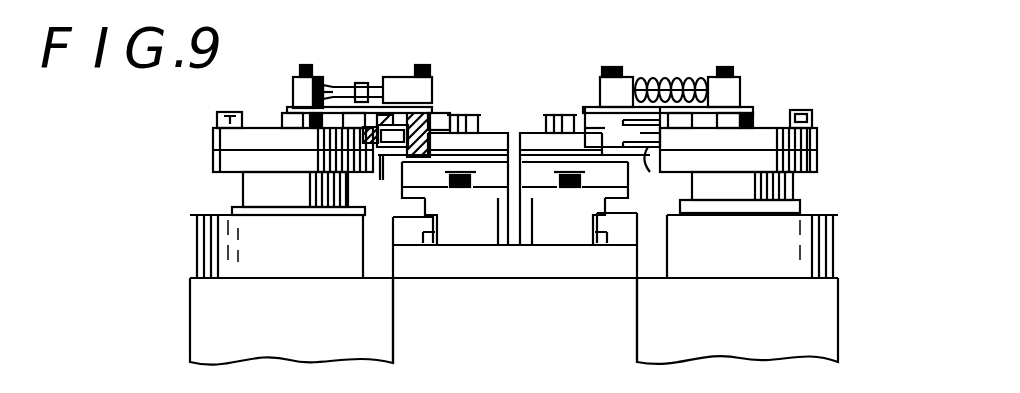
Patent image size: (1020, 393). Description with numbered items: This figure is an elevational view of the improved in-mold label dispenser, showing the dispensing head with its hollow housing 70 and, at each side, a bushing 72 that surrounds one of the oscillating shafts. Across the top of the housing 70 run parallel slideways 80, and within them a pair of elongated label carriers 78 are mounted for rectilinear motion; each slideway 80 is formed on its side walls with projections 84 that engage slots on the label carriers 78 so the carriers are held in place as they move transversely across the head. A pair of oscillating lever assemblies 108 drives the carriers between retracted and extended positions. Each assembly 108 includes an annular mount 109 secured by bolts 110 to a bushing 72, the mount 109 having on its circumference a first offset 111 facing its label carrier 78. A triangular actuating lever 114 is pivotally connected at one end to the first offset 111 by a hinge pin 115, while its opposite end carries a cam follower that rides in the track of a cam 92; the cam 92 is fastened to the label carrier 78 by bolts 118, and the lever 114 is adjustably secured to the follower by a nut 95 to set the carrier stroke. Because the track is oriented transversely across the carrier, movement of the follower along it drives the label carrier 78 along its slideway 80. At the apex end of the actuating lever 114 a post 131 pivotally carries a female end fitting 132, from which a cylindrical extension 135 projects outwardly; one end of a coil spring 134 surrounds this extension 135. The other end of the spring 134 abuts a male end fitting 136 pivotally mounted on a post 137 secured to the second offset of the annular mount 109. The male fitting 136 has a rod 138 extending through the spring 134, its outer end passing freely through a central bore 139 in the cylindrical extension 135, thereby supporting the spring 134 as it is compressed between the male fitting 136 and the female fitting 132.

The hollow housing 70 is at (200, 320).
The bushing 72 is at (250, 192).
The label carrier 78 is at (562, 293).
The slideway 80 is at (452, 247).
The projection 84 is at (433, 248).
The cam 92 is at (407, 197).
The nut 95 is at (468, 113).
The oscillating lever assembly 108 is at (277, 112).
The annular mount 109 is at (217, 142).
The bolt 110 is at (217, 120).
The first offset 111 is at (513, 182).
The actuating lever 114 is at (520, 133).
The hinge pin 115 is at (599, 135).
The bolt 118 is at (515, 208).
The post 131 is at (427, 62).
The female end fitting 132 is at (435, 92).
The coil spring 134 is at (680, 78).
The cylindrical extension 135 is at (338, 87).
The male end fitting 136 is at (296, 90).
The post 137 is at (308, 66).
The rod 138 is at (316, 80).
The central bore 139 is at (376, 97).